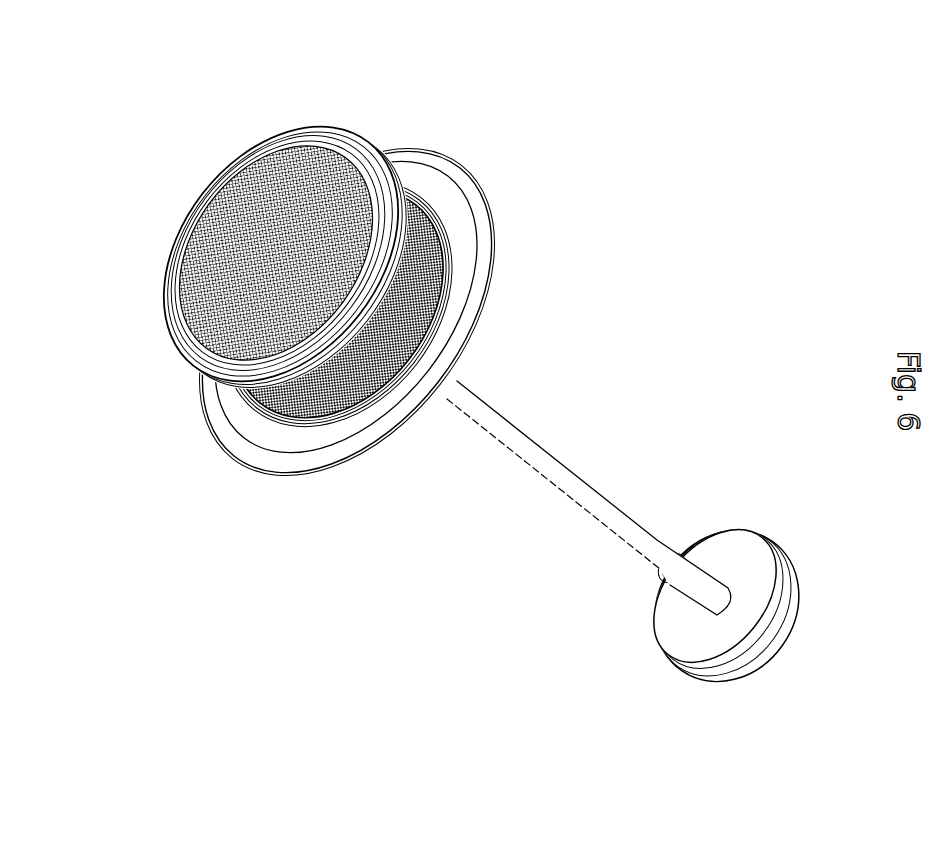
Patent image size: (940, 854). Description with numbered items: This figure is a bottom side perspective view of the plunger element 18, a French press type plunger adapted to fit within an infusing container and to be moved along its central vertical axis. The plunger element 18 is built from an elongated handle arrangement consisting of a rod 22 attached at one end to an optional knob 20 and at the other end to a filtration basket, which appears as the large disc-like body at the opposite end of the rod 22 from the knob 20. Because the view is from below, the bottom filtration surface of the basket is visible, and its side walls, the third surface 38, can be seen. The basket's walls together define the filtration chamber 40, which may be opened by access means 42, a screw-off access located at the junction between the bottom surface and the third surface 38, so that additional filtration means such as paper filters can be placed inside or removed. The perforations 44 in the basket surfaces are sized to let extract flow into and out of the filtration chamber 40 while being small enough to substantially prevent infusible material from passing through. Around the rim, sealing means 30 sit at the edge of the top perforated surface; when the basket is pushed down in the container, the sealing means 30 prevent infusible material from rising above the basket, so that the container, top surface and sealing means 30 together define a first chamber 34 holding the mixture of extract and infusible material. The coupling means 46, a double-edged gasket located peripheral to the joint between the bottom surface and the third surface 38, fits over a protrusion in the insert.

The plunger element 18 is at (762, 333).
The knob 20 is at (757, 660).
The rod 22 is at (595, 520).
The sealing means 30 is at (306, 474).
The first chamber 34 is at (267, 170).
The third surface 38 is at (330, 377).
The filtration chamber 40 is at (422, 200).
The access means 42 is at (263, 407).
The perforations 44 is at (210, 243).
The coupling means 46 is at (214, 387).